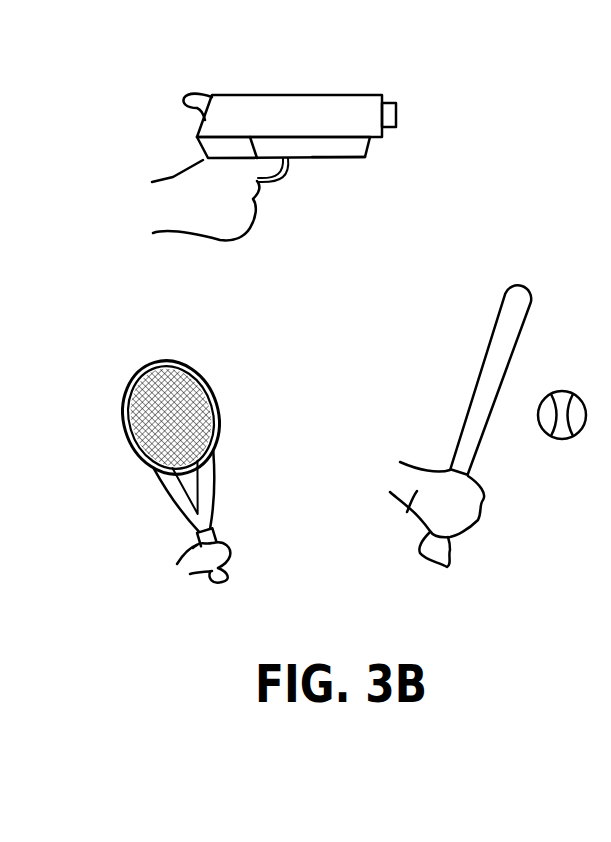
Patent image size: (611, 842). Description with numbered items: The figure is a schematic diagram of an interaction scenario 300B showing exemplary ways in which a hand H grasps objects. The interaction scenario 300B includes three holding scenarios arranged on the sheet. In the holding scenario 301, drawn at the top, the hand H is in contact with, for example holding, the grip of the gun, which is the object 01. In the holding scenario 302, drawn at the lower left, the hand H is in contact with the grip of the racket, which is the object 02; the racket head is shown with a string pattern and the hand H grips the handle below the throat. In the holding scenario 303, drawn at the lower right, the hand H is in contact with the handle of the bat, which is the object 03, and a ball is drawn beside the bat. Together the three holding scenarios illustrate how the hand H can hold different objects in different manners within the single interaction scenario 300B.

The interaction scenario 300B is at (606, 618).
The holding scenario 301 is at (166, 68).
The object 01 is at (286, 107).
The holding scenario 302 is at (118, 364).
The object 02 is at (138, 465).
The holding scenario 303 is at (447, 391).
The object 03 is at (519, 292).
The hand H is at (175, 185).